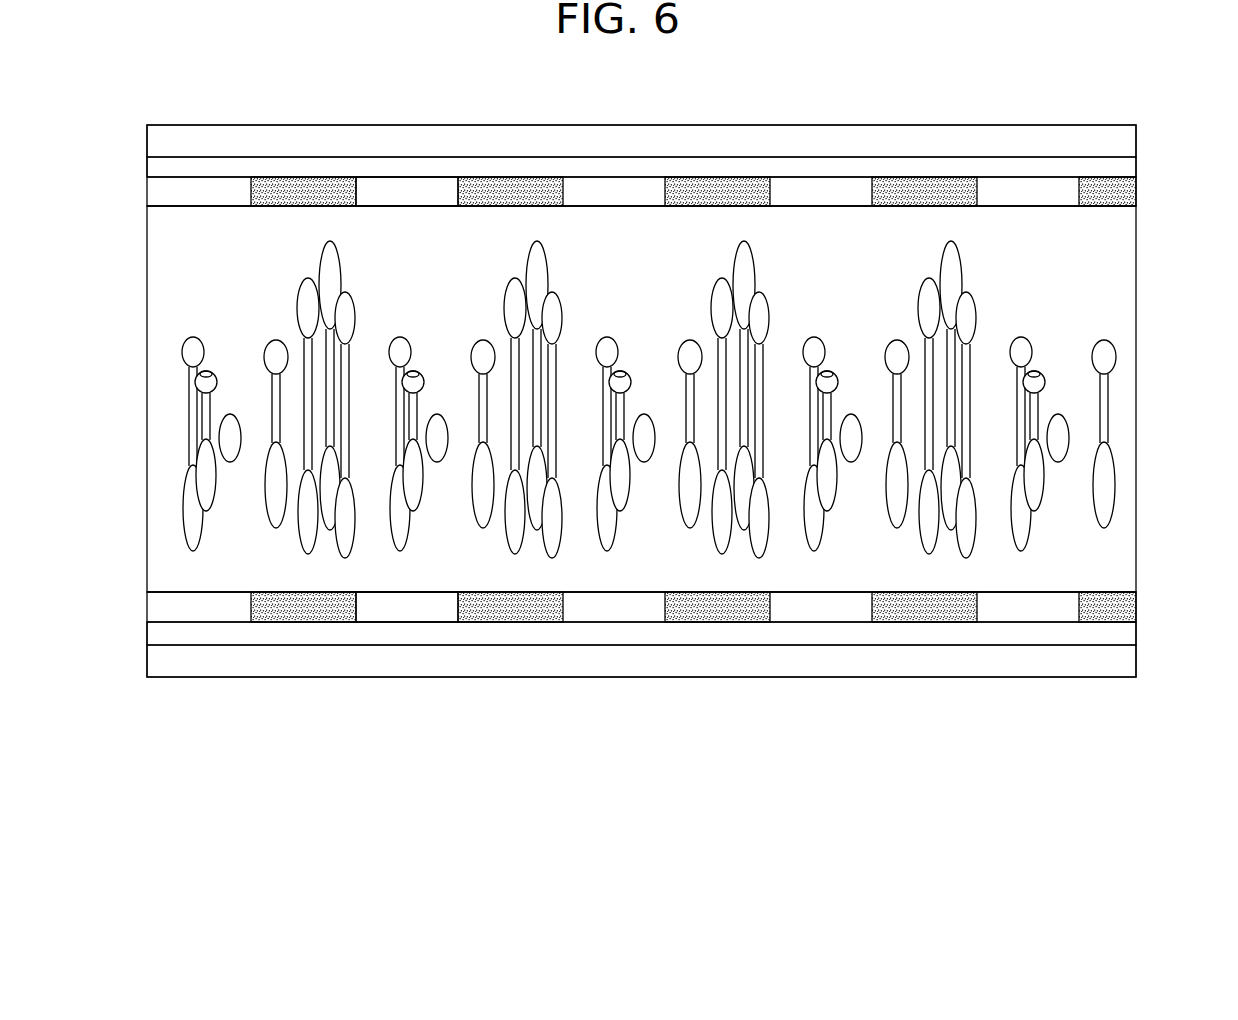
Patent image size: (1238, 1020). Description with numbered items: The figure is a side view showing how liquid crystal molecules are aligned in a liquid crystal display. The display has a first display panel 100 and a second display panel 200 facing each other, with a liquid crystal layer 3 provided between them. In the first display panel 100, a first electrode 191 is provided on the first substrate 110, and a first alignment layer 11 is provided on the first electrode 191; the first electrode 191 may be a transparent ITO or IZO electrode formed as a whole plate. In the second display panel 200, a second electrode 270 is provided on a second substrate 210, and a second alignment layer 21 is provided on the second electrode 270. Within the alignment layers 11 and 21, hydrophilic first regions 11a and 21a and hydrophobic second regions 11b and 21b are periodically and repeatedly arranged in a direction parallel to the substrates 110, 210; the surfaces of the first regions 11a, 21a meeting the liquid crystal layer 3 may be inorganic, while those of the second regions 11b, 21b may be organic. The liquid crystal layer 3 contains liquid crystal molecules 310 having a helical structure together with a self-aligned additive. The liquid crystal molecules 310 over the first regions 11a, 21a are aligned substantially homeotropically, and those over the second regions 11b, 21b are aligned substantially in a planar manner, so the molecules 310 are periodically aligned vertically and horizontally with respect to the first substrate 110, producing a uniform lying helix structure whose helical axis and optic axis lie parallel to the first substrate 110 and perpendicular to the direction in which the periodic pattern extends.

The second display panel 200 is at (1148, 125).
The second substrate 210 is at (789, 147).
The second electrode 270 is at (624, 166).
The second alignment layer 21 is at (641, 117).
The hydrophilic first region 21a is at (303, 192).
The hydrophobic second region 21b is at (407, 141).
The liquid crystal layer 3 is at (1148, 206).
The liquid crystal molecules 310 is at (649, 399).
The first display panel 100 is at (1148, 592).
The first substrate 110 is at (786, 660).
The first electrode 191 is at (624, 633).
The first alignment layer 11 is at (641, 684).
The hydrophilic first region 11a is at (303, 622).
The hydrophobic second region 11b is at (404, 612).